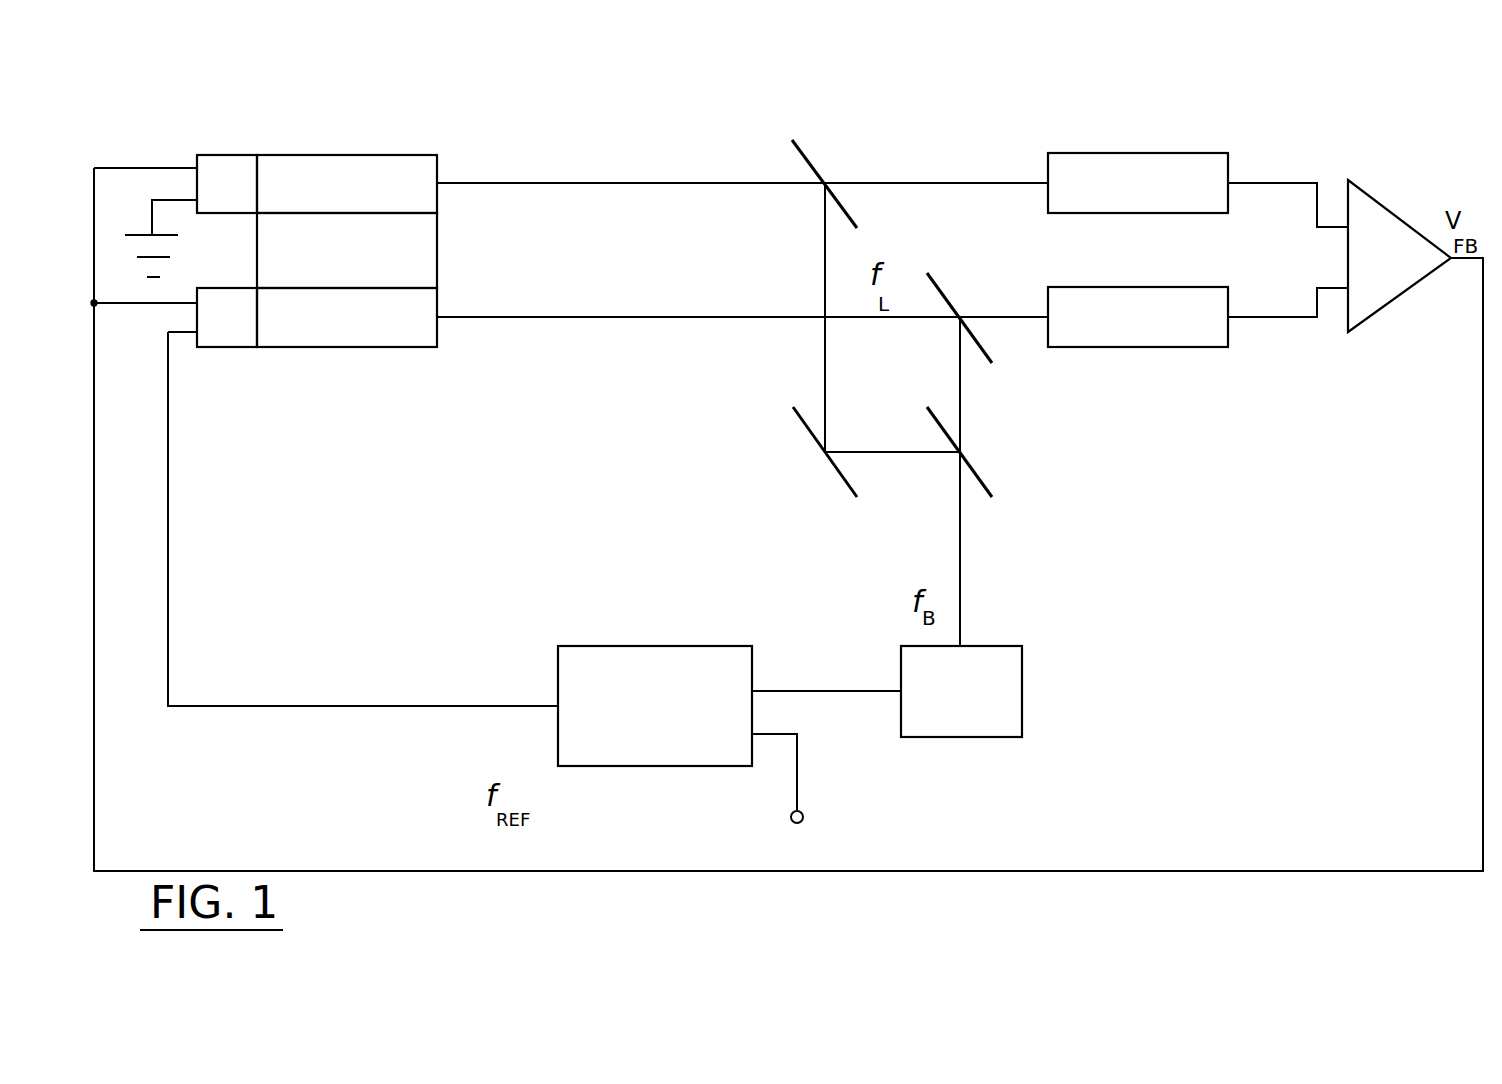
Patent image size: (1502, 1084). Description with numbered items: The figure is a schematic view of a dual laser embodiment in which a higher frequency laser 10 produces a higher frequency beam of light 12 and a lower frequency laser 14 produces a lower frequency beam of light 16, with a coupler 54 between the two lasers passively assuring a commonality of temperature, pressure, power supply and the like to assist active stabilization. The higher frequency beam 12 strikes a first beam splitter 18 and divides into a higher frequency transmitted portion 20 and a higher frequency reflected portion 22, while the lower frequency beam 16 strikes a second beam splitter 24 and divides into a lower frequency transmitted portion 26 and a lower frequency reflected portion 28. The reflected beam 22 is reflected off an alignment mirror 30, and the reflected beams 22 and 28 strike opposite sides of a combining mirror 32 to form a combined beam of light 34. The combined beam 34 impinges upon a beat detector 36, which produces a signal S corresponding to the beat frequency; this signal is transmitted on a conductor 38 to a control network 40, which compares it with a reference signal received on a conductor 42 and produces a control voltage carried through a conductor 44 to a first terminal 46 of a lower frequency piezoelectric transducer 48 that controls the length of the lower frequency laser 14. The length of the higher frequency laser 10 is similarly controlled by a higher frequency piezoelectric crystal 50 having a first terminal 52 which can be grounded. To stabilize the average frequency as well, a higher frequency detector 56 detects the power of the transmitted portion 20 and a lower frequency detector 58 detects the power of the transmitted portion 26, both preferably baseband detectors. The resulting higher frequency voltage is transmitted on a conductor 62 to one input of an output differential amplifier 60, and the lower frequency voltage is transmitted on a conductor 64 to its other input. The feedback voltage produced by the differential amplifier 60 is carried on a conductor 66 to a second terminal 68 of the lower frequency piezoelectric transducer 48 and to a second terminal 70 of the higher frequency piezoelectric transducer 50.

The higher frequency laser 10 is at (325, 168).
The higher frequency beam of light 12 is at (565, 183).
The lower frequency laser 14 is at (360, 338).
The lower frequency beam of light 16 is at (572, 317).
The first beam splitter 18 is at (812, 155).
The higher frequency transmitted portion 20 is at (980, 177).
The higher frequency reflected portion 22 is at (825, 257).
The second beam splitter 24 is at (940, 282).
The lower frequency transmitted portion 26 is at (1010, 317).
The lower frequency reflected portion 28 is at (960, 397).
The alignment mirror 30 is at (800, 415).
The combining mirror 32 is at (977, 472).
The combined beam of light 34 is at (960, 553).
The beat detector 36 is at (1005, 683).
The conductor 38 is at (842, 691).
The control network 40 is at (632, 655).
The conductor 42 is at (797, 782).
The conductor 44 is at (268, 706).
The first terminal 46 is at (195, 336).
The lower frequency piezoelectric transducer 48 is at (235, 333).
The higher frequency piezoelectric crystal 50 is at (225, 168).
The first terminal 52 is at (197, 207).
The coupler 54 is at (420, 240).
The higher frequency detector 56 is at (1090, 160).
The lower frequency detector 58 is at (1132, 332).
The output differential amplifier 60 is at (1385, 220).
The conductor 62 is at (1310, 180).
The conductor 64 is at (1257, 320).
The conductor 66 is at (1140, 871).
The second terminal 68 is at (195, 305).
The second terminal 70 is at (195, 168).